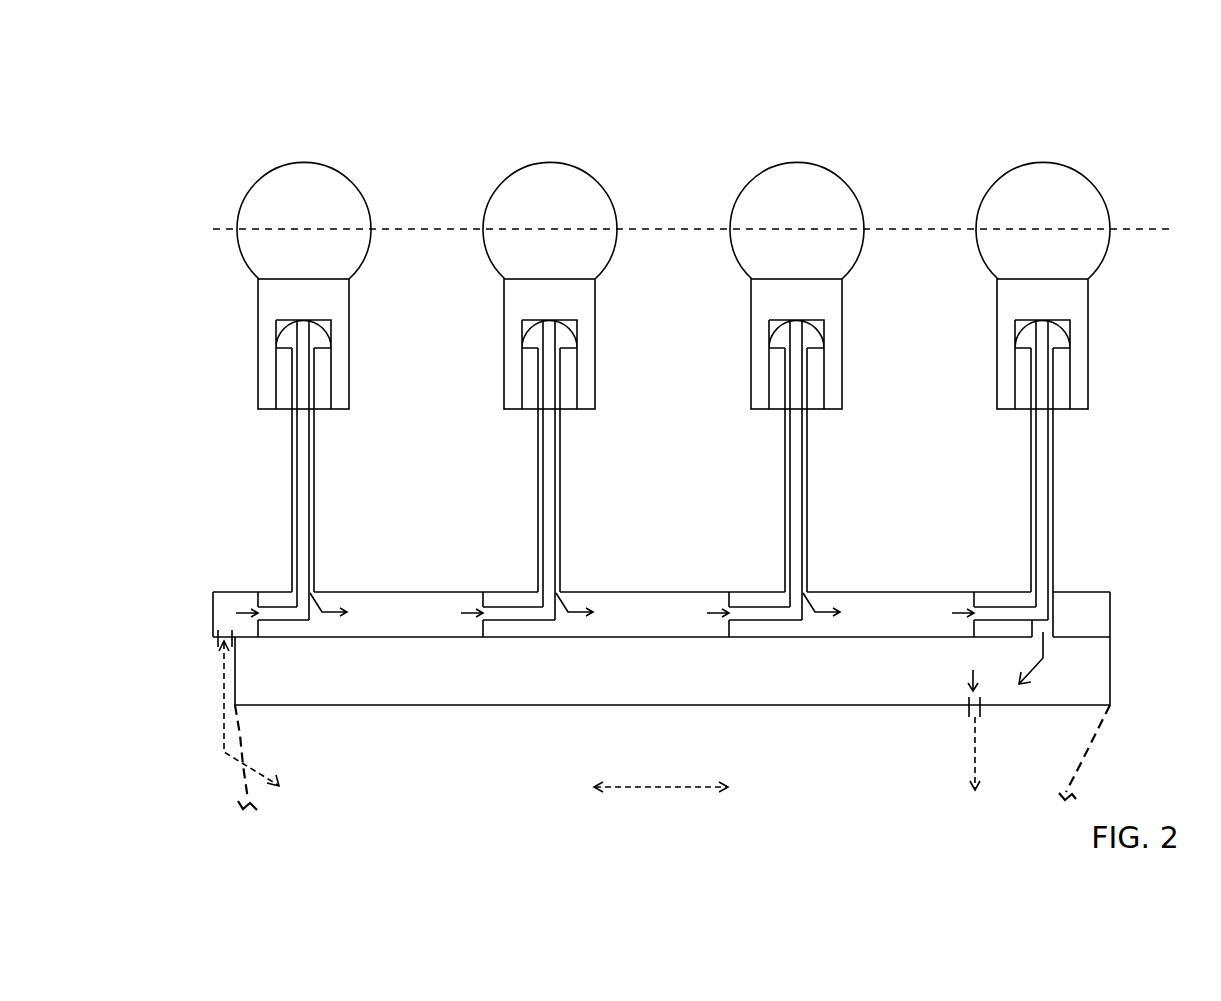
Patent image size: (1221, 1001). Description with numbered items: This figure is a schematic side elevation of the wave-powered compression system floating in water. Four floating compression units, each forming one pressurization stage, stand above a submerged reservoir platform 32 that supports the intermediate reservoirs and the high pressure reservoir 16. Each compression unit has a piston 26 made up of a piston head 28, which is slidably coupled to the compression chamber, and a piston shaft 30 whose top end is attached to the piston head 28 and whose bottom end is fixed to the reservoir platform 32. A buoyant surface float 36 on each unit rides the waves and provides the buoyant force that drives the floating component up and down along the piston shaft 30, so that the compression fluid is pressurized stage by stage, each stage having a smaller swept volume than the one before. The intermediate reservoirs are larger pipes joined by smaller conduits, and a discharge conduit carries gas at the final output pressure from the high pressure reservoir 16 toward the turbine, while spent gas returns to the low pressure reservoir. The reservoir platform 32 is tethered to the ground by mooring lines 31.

The high pressure reservoir 16 is at (1084, 678).
The piston 26 is at (292, 443).
The piston head 28 is at (317, 335).
The piston shaft 30 is at (312, 443).
The mooring line 31 is at (240, 736).
The reservoir platform 32 is at (905, 706).
The buoyant surface float 36 is at (352, 182).